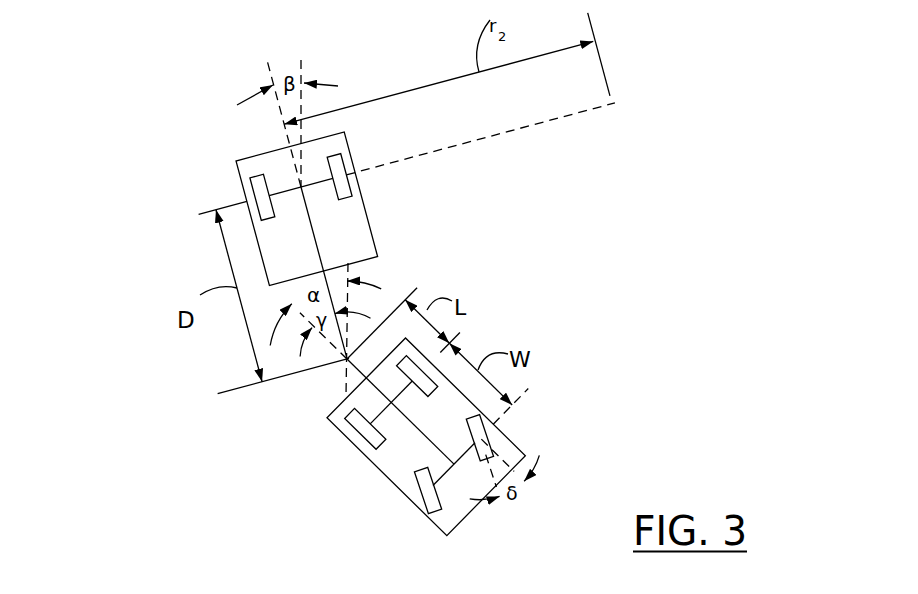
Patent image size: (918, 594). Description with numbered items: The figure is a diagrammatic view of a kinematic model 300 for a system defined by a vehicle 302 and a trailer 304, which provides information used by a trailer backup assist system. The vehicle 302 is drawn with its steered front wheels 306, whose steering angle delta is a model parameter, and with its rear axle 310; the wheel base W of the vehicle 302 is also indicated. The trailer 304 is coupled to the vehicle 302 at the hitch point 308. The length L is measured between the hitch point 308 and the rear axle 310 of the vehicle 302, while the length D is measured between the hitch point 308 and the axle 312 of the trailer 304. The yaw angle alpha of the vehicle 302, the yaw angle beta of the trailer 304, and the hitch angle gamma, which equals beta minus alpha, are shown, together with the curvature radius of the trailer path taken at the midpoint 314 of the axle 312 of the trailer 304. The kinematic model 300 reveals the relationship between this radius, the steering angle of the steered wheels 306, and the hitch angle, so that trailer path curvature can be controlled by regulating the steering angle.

The kinematic model 300 is at (178, 258).
The vehicle 302 is at (512, 443).
The trailer 304 is at (248, 165).
The steered front wheels 306 is at (427, 502).
The hitch point 308 is at (345, 360).
The rear axle 310 is at (388, 433).
The axle 312 is at (318, 188).
The midpoint 314 is at (300, 186).